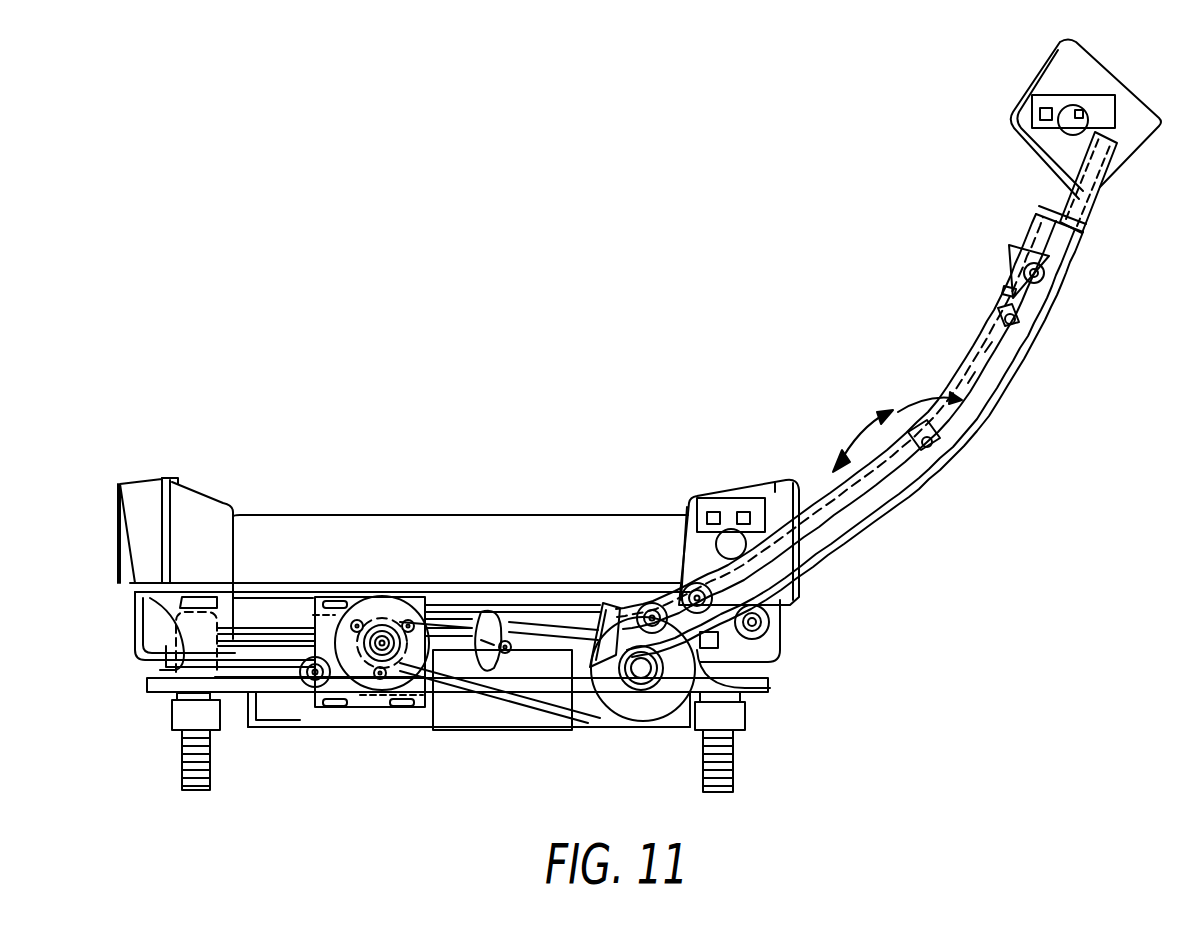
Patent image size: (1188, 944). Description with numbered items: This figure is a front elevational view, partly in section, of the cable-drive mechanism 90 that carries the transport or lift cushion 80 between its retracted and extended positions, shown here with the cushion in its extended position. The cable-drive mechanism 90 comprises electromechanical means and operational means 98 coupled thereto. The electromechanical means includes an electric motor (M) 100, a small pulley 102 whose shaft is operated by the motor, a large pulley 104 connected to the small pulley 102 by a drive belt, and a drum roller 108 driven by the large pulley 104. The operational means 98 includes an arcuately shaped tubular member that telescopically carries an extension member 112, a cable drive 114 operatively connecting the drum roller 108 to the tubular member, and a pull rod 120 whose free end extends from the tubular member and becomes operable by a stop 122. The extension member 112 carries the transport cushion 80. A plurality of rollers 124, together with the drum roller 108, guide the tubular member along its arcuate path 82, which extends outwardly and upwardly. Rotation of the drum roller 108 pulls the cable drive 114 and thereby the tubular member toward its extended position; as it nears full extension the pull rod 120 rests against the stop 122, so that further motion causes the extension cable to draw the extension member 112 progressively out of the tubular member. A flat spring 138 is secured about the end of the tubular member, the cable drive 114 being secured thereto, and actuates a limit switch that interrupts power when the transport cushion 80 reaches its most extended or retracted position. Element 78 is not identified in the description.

The bed plate 78 is at (302, 542).
The transport or lift cushion 80 is at (775, 487).
The arcuate path 82 is at (868, 436).
The cable-drive mechanism 90 is at (386, 775).
The operational means 98 is at (858, 536).
The electric motor 100 is at (462, 732).
The small pulley 102 is at (377, 627).
The large pulley 104 is at (612, 690).
The drum roller 108 is at (640, 690).
The extension member 112 is at (1060, 205).
The cable drive 114 is at (903, 488).
The pull rod 120 is at (655, 603).
The stop 122 is at (501, 618).
The rollers 124 is at (300, 686).
The flat spring 138 is at (515, 635).